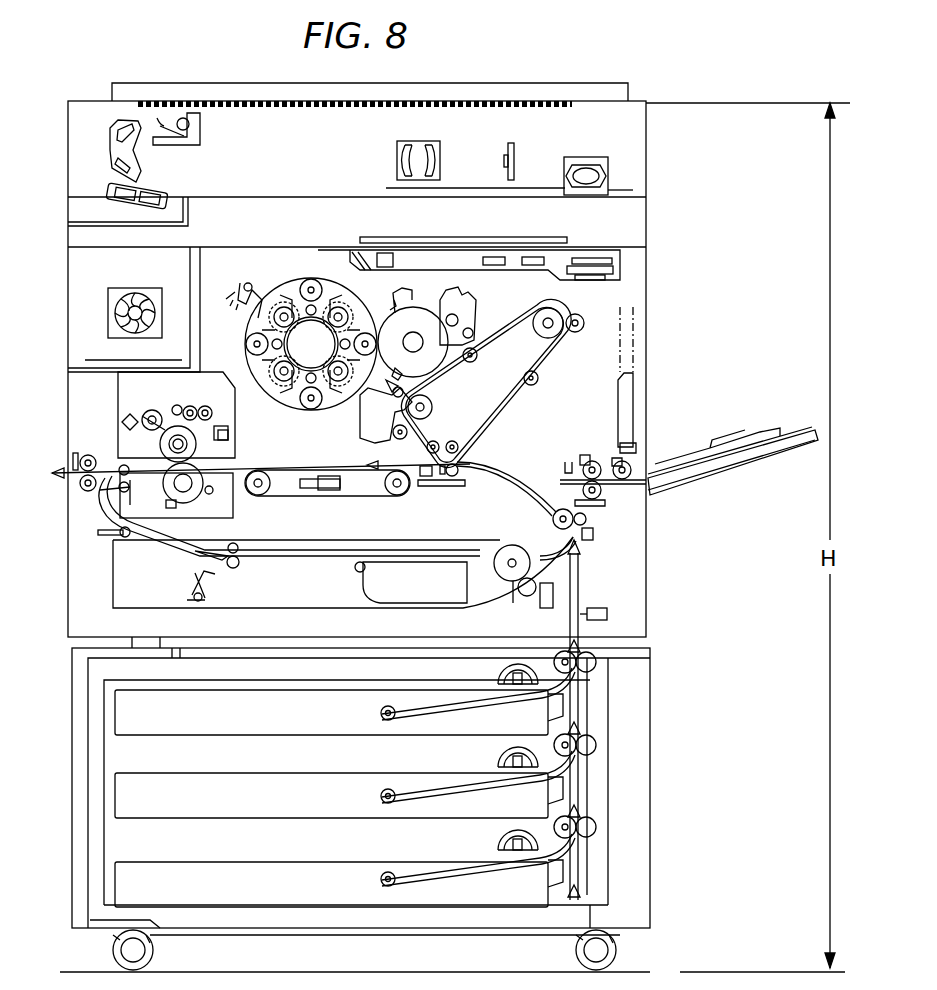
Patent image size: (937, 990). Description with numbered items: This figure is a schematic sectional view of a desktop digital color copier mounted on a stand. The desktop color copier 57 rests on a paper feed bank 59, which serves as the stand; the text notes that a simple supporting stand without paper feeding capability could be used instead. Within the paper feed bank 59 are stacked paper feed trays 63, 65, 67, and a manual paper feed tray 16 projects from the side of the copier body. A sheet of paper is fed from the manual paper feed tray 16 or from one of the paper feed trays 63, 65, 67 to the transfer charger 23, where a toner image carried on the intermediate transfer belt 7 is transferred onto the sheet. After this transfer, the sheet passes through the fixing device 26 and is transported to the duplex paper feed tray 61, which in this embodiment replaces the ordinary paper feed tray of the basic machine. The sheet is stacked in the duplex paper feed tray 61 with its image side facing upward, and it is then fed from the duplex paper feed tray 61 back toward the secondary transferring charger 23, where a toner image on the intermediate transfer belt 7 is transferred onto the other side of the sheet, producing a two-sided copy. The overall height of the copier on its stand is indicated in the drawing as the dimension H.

The desktop color copier 57 is at (136, 68).
The paper feed bank 59 is at (64, 798).
The fixing device 26 is at (118, 399).
The intermediate transfer belt 7 is at (549, 365).
The transfer charger 23 is at (452, 474).
The manual paper feed tray 16 is at (709, 468).
The duplex paper feed tray 61 is at (118, 587).
The paper feed tray 63 is at (542, 717).
The paper feed tray 65 is at (542, 800).
The paper feed tray 67 is at (545, 888).